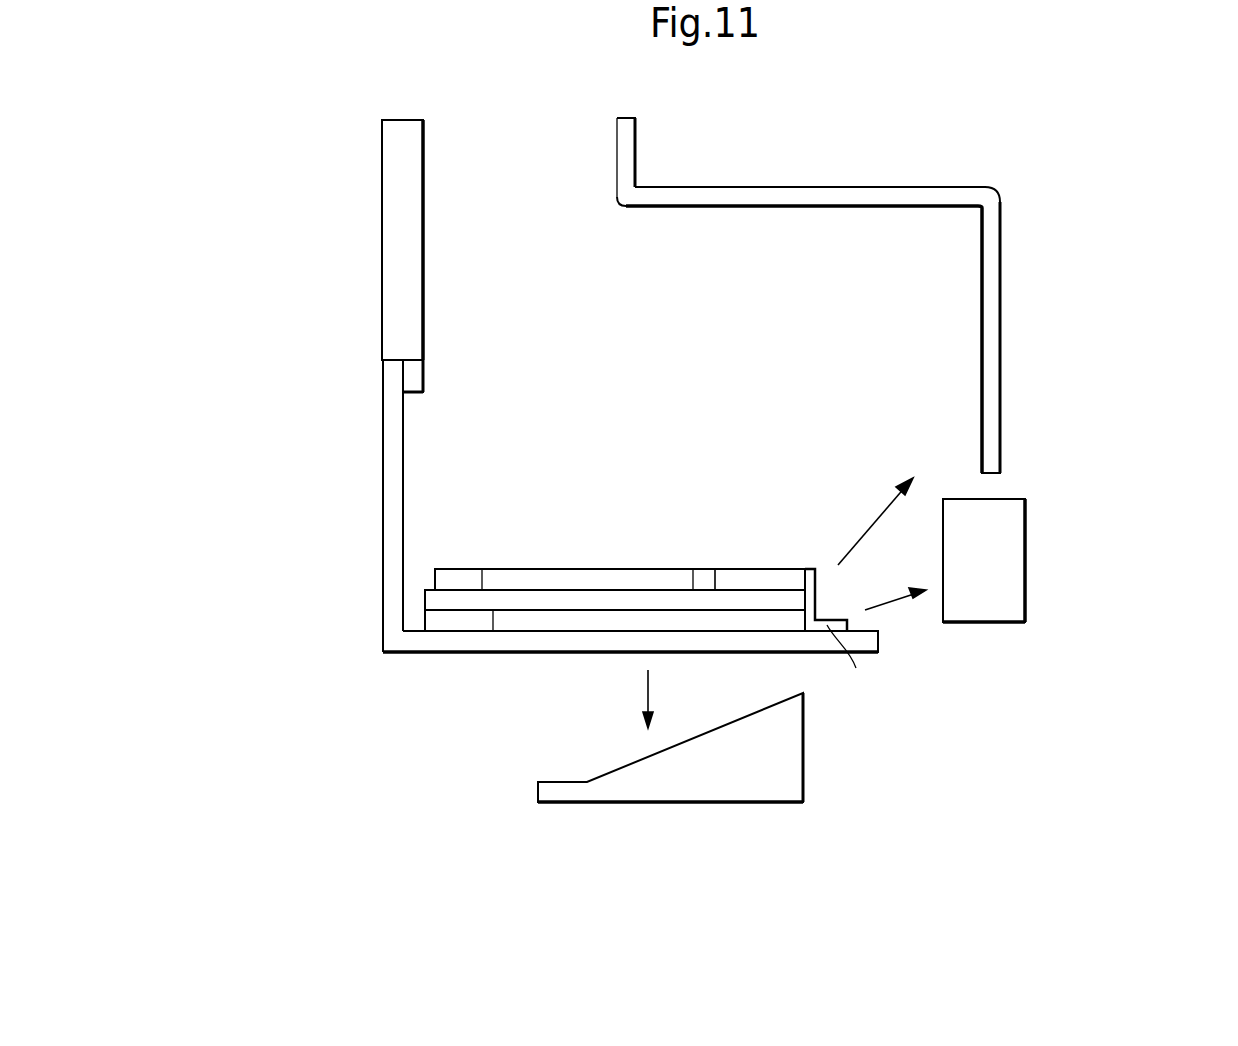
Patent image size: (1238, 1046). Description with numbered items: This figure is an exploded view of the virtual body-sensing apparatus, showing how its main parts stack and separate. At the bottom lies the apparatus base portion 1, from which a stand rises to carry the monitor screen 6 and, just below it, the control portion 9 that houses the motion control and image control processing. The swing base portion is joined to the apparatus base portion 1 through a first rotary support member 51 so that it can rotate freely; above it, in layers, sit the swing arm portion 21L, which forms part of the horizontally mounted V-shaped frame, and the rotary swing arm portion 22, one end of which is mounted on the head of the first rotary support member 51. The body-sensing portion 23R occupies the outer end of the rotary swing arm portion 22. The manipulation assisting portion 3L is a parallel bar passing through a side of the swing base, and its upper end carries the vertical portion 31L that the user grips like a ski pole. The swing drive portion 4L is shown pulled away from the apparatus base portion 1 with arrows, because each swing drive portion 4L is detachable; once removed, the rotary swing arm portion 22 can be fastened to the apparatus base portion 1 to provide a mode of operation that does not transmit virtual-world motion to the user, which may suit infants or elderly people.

The monitor screen 6 is at (404, 128).
The control portion 9 is at (416, 376).
The apparatus base portion 1 is at (541, 640).
The first rotary support member 51 is at (451, 621).
The swing arm portion 21L is at (433, 602).
The rotary swing arm portion 22 is at (548, 577).
The body-sensing portion 23R is at (762, 578).
The vertical portion 31L is at (627, 124).
The manipulation assisting portion 3L is at (737, 192).
The swing drive portion 4L is at (983, 602).